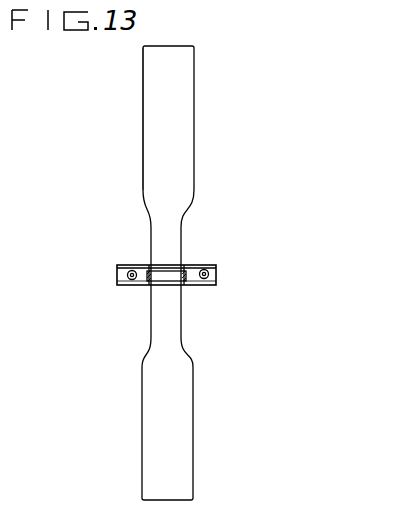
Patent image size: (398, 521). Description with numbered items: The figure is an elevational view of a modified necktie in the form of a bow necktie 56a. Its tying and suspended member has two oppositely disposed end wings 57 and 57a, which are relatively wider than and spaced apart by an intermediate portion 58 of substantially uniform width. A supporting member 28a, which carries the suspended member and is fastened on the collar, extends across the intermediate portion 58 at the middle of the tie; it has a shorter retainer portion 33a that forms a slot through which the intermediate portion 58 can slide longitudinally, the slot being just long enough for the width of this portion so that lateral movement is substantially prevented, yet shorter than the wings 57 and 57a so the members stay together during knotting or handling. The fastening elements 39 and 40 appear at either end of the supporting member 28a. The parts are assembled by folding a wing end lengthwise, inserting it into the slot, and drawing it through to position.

The wing 57 is at (194, 91).
The bow necktie 56a is at (143, 119).
The intermediate portion 58 is at (183, 238).
The wing 57a is at (193, 452).
The supporting member 28a is at (193, 265).
The retainer portion 33a is at (187, 287).
The clamp screw 39 is at (140, 270).
The clamp jaw 40 is at (133, 282).